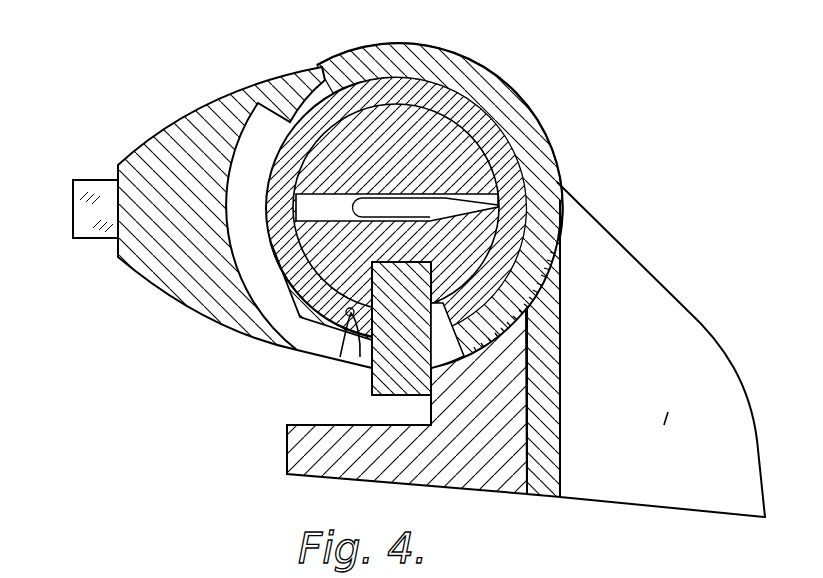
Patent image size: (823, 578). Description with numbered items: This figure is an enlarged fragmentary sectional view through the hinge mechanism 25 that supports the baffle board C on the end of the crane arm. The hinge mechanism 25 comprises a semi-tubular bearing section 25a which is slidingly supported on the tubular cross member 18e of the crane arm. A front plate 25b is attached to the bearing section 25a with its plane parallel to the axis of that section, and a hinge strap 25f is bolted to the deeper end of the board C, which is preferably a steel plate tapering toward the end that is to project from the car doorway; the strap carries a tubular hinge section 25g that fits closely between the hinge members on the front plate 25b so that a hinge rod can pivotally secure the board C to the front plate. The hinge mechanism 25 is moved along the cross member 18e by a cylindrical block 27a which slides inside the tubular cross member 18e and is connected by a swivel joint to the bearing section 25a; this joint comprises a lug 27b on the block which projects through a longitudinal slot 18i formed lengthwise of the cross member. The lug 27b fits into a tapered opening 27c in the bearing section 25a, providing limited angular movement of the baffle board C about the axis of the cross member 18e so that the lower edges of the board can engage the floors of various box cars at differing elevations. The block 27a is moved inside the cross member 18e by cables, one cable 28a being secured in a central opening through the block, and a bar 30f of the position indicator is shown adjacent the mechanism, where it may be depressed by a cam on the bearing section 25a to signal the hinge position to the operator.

The hinge mechanism 25 is at (695, 301).
The semi-tubular bearing section 25a is at (505, 98).
The front plate 25b is at (553, 372).
The hinge strap 25f is at (162, 137).
The tubular hinge section 25g is at (673, 411).
The cylindrical block 27a is at (452, 88).
The lug 27b is at (372, 385).
The tapered opening 27c is at (453, 348).
The cable 28a is at (350, 200).
The tubular cross member 18e is at (505, 153).
The longitudinal slot 18i is at (338, 357).
The bar 30f is at (80, 210).
The baffle board C is at (288, 467).